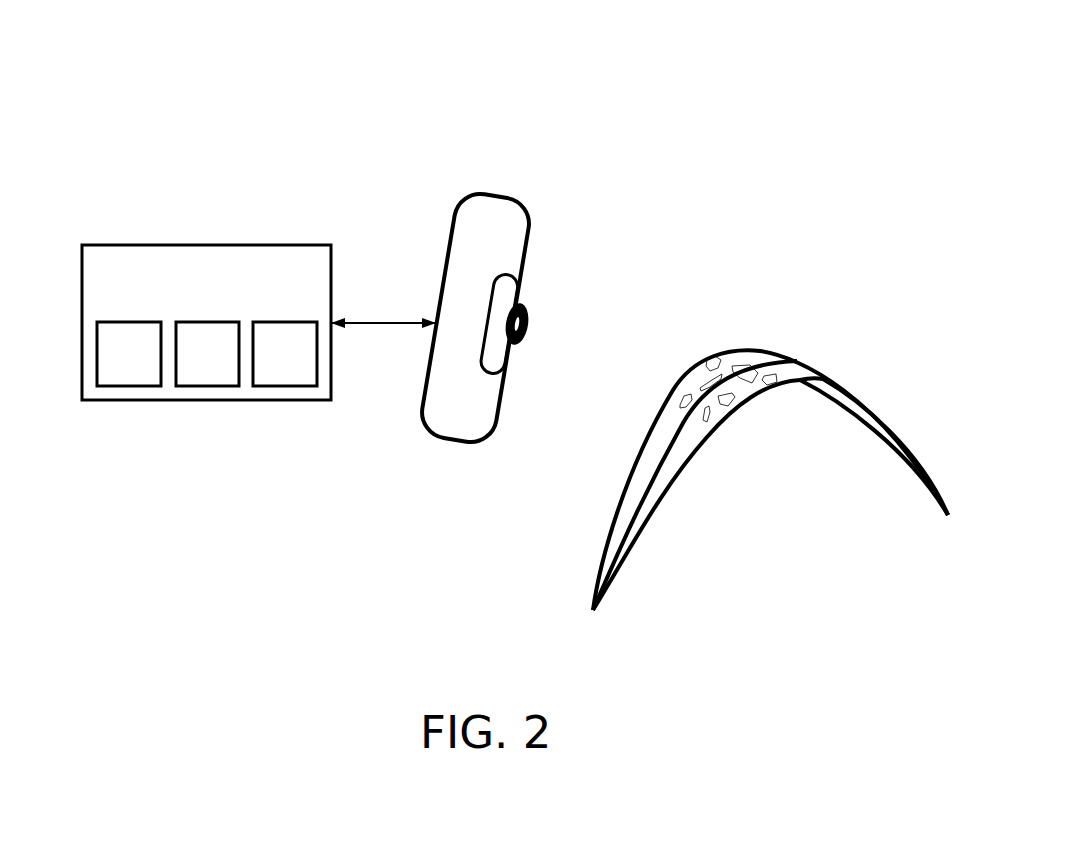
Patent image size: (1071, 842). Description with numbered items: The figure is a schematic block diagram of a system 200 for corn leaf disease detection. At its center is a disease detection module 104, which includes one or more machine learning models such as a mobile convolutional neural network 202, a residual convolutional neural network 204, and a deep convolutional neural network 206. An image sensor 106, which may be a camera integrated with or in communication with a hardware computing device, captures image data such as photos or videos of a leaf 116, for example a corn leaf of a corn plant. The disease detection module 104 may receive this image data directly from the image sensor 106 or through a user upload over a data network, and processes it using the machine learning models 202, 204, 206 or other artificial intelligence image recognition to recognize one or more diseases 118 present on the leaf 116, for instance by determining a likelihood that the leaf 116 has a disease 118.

The system for corn leaf disease detection 200 is at (110, 44).
The disease detection module 104 is at (187, 304).
The mobile convolutional neural network 202 is at (109, 366).
The residual convolutional neural network 204 is at (187, 366).
The deep convolutional neural network 206 is at (265, 366).
The image sensor 106 is at (519, 200).
The leaf 116 is at (621, 513).
The disease 118 is at (712, 366).